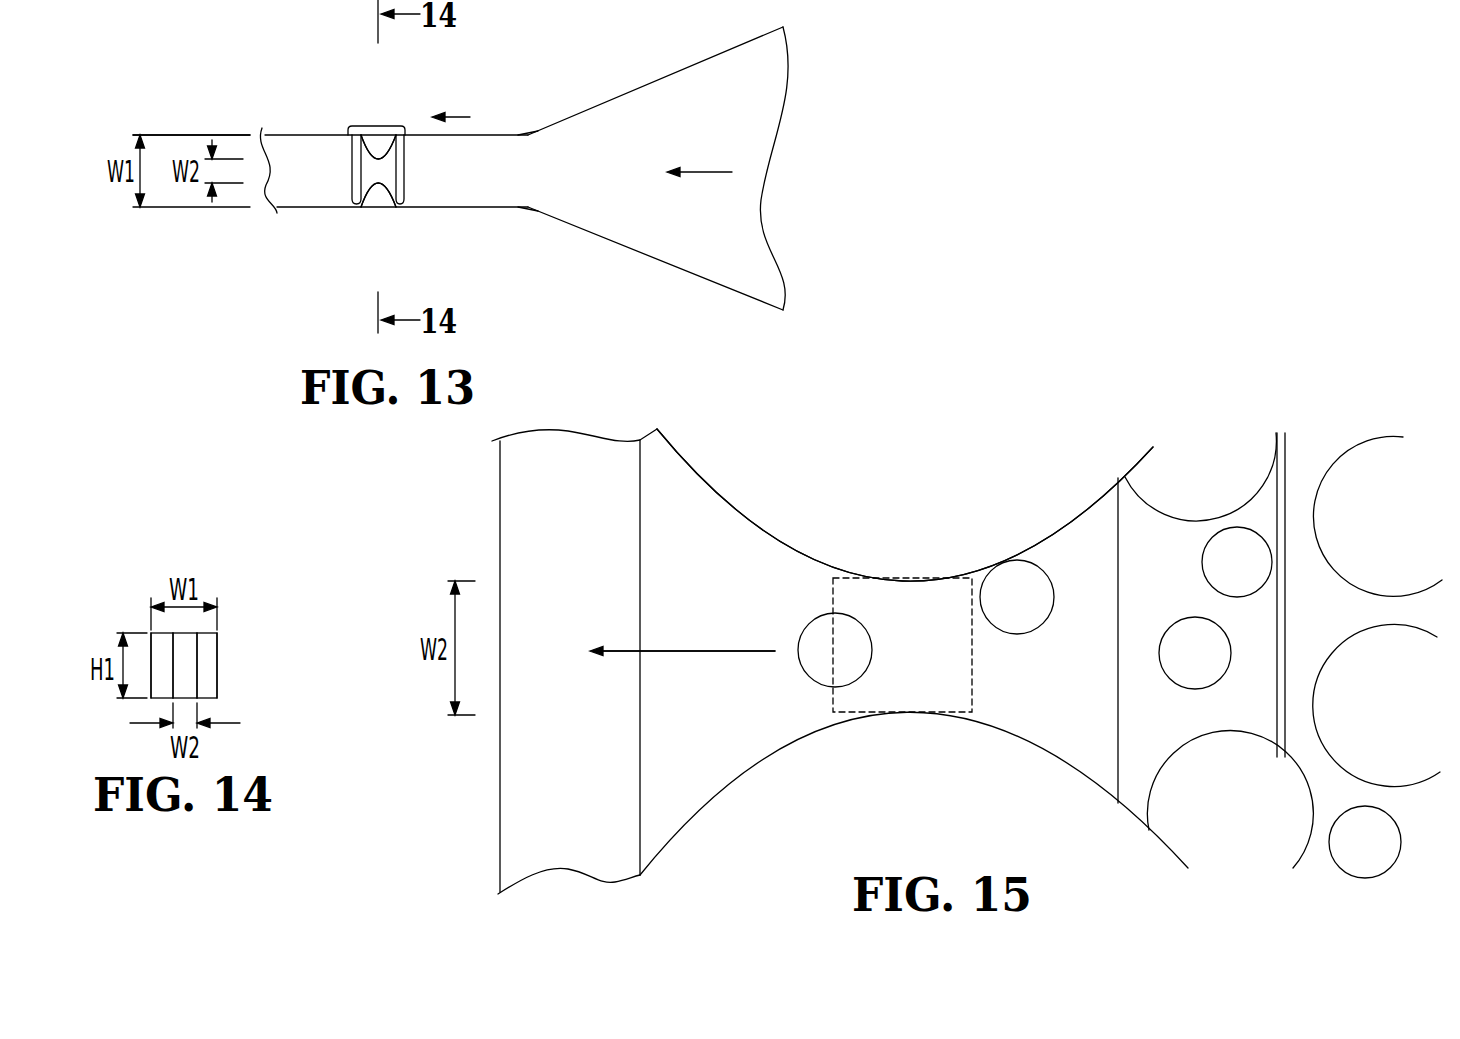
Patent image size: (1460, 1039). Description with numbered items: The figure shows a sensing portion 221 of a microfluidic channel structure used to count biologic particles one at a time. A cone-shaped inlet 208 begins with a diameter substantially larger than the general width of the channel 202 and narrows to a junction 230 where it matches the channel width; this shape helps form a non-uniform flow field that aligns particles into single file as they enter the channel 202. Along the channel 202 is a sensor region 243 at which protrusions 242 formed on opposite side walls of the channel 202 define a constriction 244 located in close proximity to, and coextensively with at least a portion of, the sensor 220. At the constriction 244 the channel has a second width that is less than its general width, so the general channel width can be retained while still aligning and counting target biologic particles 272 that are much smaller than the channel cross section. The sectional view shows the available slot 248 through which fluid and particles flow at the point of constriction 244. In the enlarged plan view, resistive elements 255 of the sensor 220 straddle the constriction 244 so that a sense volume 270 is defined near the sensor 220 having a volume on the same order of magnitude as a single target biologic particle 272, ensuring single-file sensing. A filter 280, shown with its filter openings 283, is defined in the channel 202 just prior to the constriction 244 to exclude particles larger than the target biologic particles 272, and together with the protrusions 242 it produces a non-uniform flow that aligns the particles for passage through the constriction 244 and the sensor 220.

In FIG. 13, the channel 202 is at (316, 134).
In FIG. 14, the channel 202 is at (222, 668).
In FIG. 13, the inlet 208 is at (672, 75).
In FIG. 13, the sensor 220 is at (375, 125).
In FIG. 13, the sensing portion 221 is at (298, 30).
In FIG. 13, the junction 230 is at (527, 128).
In FIG. 13, the protrusion 242 is at (373, 200).
In FIG. 14, the protrusion 242 is at (160, 645).
In FIG. 15, the protrusion 242 is at (927, 550).
In FIG. 13, the sensor region 243 is at (380, 216).
In FIG. 15, the sensor region 243 is at (960, 440).
In FIG. 13, the constriction 244 is at (392, 167).
In FIG. 14, the constriction 244 is at (186, 663).
In FIG. 15, the constriction 244 is at (783, 598).
In FIG. 14, the slot 248 is at (190, 647).
In FIG. 15, the resistive element 255 is at (603, 563).
In FIG. 15, the sense volume 270 is at (927, 655).
In FIG. 15, the target biologic particle 272 is at (809, 677).
In FIG. 15, the filter 280 is at (1320, 406).
In FIG. 15, the large aperture 283 is at (1221, 481).